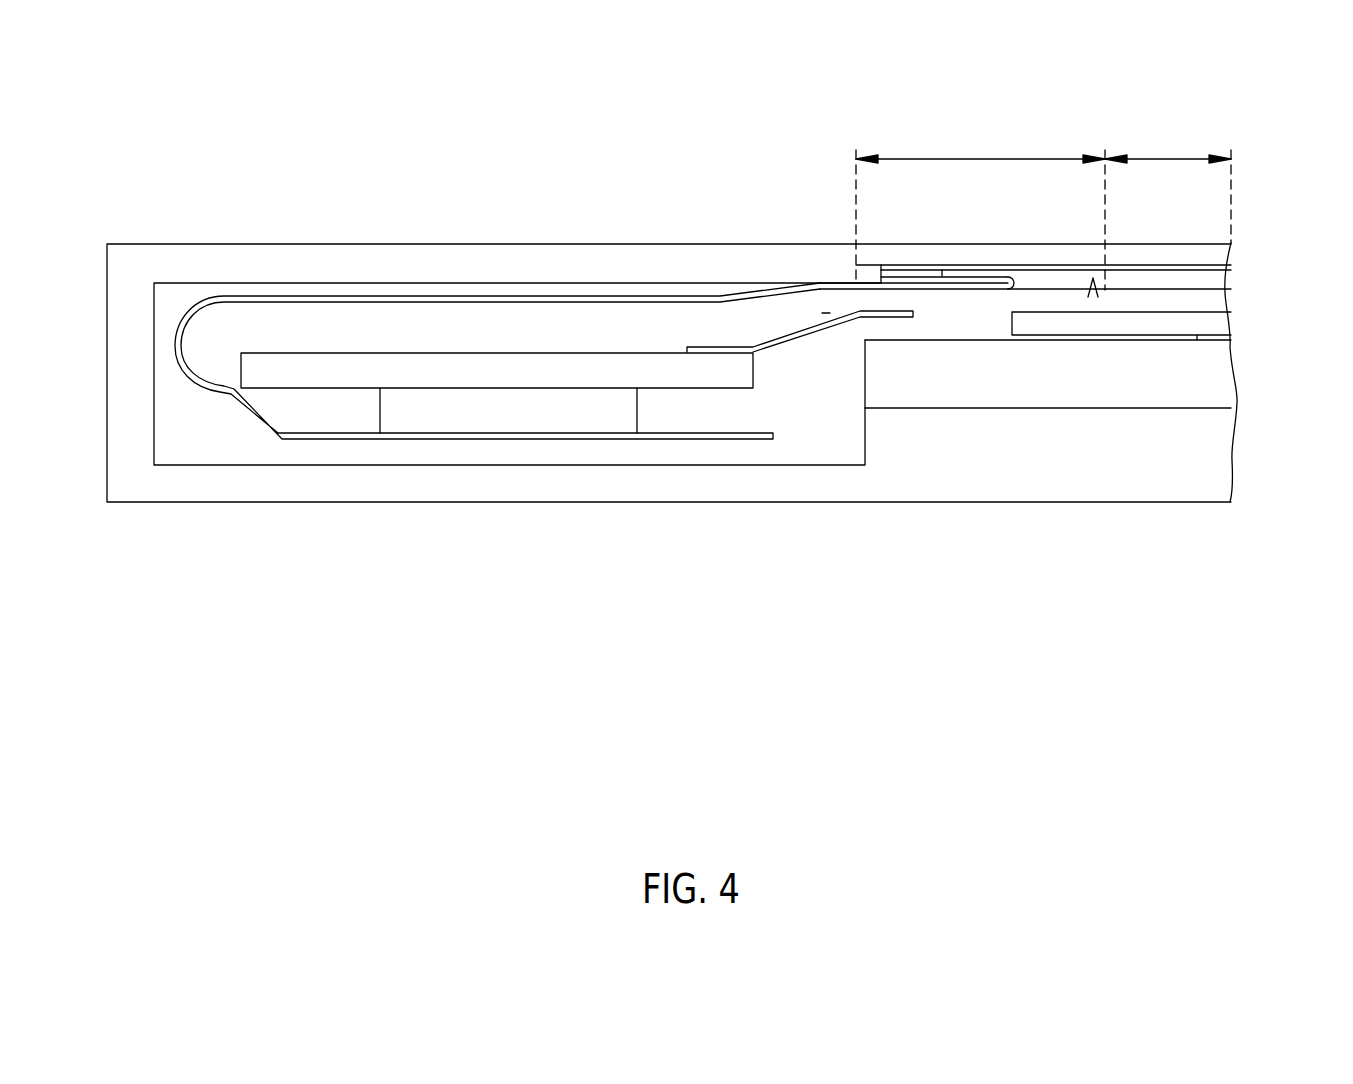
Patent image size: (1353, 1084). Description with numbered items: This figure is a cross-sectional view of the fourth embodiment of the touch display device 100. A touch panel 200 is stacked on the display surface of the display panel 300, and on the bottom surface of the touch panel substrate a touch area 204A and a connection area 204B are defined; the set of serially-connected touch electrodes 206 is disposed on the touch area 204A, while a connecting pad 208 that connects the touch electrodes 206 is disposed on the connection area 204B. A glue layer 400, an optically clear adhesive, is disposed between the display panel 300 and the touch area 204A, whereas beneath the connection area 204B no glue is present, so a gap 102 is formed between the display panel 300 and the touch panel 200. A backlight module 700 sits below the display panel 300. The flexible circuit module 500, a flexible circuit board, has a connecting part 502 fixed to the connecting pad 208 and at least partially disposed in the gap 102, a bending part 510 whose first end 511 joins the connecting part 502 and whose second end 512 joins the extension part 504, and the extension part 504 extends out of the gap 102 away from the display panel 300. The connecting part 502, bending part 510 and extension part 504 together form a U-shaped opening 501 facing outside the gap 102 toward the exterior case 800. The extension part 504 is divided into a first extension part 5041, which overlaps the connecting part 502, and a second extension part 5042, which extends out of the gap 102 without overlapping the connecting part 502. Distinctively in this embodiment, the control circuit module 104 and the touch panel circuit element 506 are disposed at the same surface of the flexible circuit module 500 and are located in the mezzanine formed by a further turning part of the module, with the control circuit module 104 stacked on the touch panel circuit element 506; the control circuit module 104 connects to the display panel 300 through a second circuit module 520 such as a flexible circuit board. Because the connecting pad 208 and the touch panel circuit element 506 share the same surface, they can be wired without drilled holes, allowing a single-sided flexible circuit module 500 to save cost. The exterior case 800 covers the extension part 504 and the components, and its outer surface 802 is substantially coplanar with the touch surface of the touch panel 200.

The touch display device 100 is at (178, 115).
The gap 102 is at (1093, 288).
The control circuit module 104 is at (293, 367).
The touch panel 200 is at (1213, 249).
The touch area 204A is at (1168, 145).
The connection area 204B is at (980, 145).
The set of serially-connected touch electrodes 206 is at (1222, 268).
The connecting pad 208 is at (920, 271).
The display panel 300 is at (1213, 307).
The glue layer 400 is at (1213, 280).
The flexible circuit module 500 is at (930, 651).
The U-shaped opening 501 is at (877, 284).
The connecting part 502 is at (963, 277).
The extension part 504 is at (860, 606).
The first extension part 5041 is at (888, 290).
The second extension part 5042 is at (773, 294).
The touch panel circuit element 506 is at (450, 413).
The bending part 510 is at (1087, 576).
The first end 511 is at (1012, 277).
The second end 512 is at (1007, 291).
The second circuit module 520 is at (826, 313).
The backlight module 700 is at (1213, 380).
The exterior case 800 is at (123, 313).
The outer surface 802 is at (338, 243).